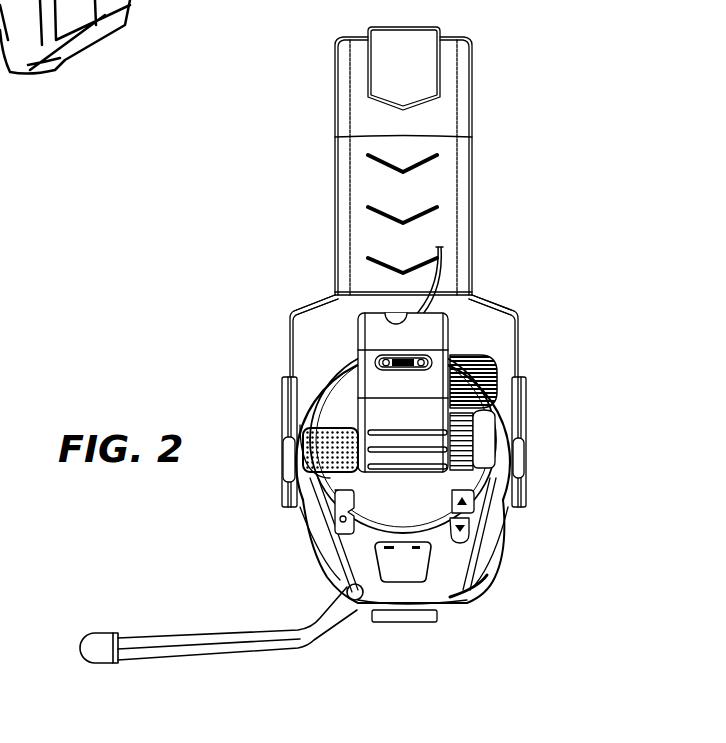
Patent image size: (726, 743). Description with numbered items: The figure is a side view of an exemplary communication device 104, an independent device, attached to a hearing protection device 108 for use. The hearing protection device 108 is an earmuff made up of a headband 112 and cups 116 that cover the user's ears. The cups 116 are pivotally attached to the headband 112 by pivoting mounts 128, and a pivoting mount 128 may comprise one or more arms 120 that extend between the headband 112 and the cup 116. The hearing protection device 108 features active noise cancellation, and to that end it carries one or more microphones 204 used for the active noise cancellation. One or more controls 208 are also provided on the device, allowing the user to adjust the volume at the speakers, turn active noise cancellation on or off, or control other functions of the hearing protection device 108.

The communication device 104 is at (444, 626).
The hearing protection device 108 is at (512, 221).
The headband 112 is at (335, 87).
The cups 116 is at (330, 350).
The arms 120 is at (328, 298).
The pivoting mounts 128 is at (282, 458).
The microphones 204 is at (298, 512).
The controls 208 is at (503, 353).